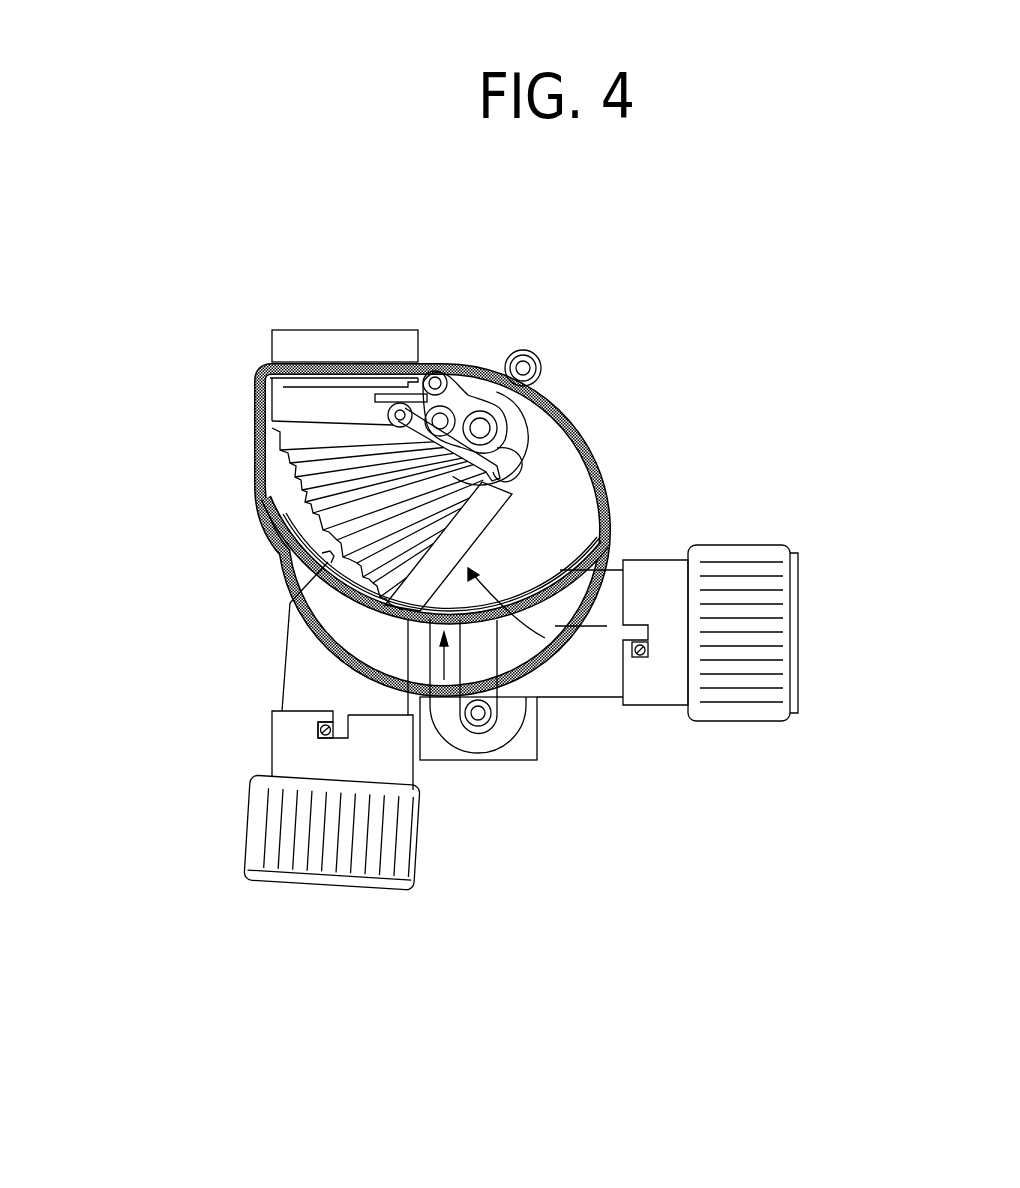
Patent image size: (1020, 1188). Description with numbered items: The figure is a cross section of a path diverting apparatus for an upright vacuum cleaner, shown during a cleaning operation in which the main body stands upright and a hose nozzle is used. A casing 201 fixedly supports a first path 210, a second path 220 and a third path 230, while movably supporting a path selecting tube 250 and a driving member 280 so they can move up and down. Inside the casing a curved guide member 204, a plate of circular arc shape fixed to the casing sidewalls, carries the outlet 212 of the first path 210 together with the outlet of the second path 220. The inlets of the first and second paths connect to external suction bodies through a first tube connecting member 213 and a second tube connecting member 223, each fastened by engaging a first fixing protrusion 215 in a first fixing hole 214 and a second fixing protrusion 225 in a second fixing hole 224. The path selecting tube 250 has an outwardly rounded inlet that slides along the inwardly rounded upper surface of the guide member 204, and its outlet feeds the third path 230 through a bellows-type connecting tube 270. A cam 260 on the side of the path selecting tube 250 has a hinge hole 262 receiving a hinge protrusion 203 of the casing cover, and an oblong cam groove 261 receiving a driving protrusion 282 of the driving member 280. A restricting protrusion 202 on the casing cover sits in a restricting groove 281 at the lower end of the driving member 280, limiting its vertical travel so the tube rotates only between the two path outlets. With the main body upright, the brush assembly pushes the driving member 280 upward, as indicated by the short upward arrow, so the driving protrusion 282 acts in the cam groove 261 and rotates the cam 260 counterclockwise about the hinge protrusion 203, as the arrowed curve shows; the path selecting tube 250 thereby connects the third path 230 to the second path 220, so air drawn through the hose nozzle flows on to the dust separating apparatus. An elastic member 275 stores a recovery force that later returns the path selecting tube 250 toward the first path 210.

The casing 201 is at (607, 487).
The restricting protrusion 202 is at (438, 745).
The hinge protrusion 203 is at (483, 400).
The guide member 204 is at (380, 714).
The first path 210 is at (290, 650).
The outlet of the first path 212 is at (300, 603).
The first tube connecting member 213 is at (248, 845).
The first fixing hole 214 is at (330, 742).
The first fixing protrusion 215 is at (325, 736).
The second path 220 is at (573, 698).
The second tube connecting member 223 is at (748, 546).
The second fixing hole 224 is at (642, 627).
The second fixing protrusion 225 is at (645, 658).
The third path 230 is at (290, 333).
The path selecting tube 250 is at (517, 543).
The cam 260 is at (488, 398).
The cam groove 261 is at (529, 415).
The hinge hole 262 is at (456, 410).
The connecting tube 270 is at (258, 447).
The elastic member 275 is at (395, 412).
The driving member 280 is at (483, 752).
The restricting groove 281 is at (572, 690).
The driving protrusion 282 is at (560, 437).